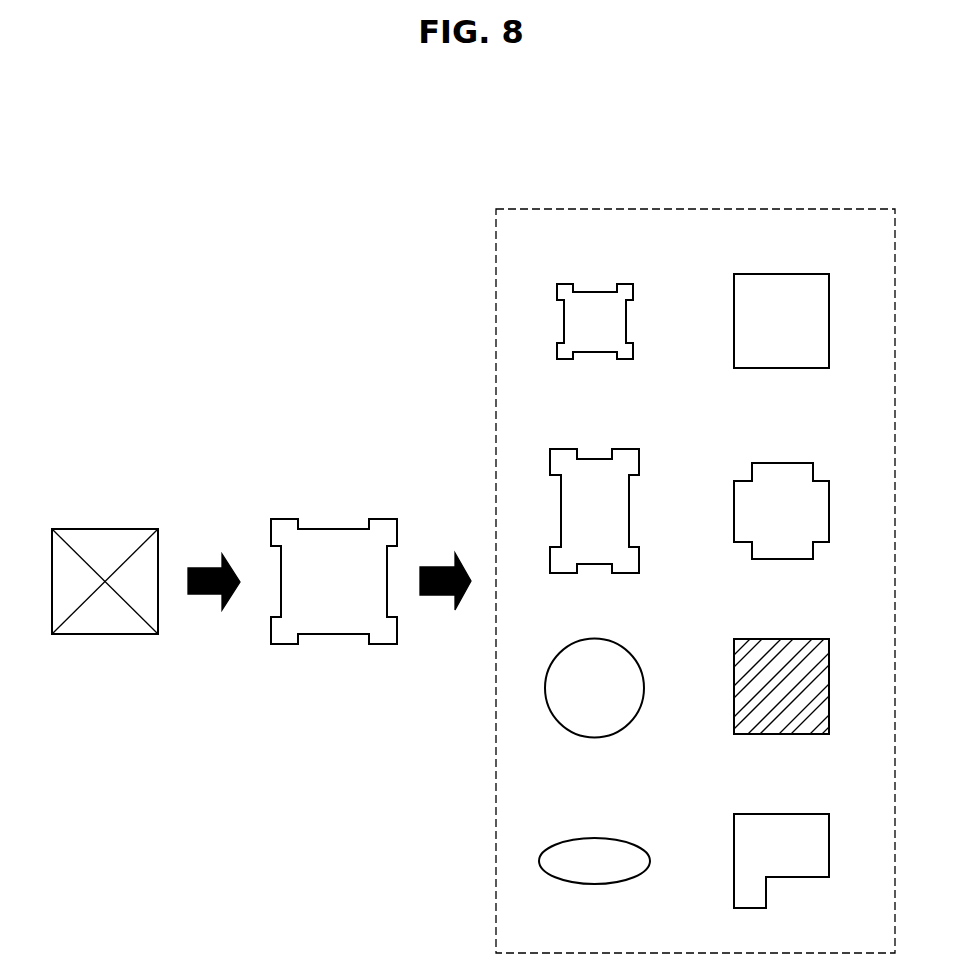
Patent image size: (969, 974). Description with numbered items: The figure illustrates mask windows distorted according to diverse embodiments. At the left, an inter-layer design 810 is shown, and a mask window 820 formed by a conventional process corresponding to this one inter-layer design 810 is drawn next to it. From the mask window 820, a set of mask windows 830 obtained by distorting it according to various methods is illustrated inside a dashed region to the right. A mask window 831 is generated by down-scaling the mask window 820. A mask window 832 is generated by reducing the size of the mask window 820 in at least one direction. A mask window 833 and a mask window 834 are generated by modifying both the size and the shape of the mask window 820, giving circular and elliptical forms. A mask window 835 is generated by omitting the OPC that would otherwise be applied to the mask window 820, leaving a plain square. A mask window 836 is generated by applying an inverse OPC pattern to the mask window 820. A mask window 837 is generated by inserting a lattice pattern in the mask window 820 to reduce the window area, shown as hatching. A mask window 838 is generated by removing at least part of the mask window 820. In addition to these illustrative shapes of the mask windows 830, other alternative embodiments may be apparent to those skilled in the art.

The inter-layer design 810 is at (103, 529).
The mask window 820 is at (331, 529).
The mask windows 830 is at (693, 209).
The mask window 831 is at (625, 284).
The mask window 832 is at (627, 449).
The mask window 833 is at (596, 639).
The mask window 834 is at (597, 838).
The mask window 835 is at (783, 274).
The mask window 836 is at (783, 463).
The mask window 837 is at (798, 639).
The mask window 838 is at (783, 814).